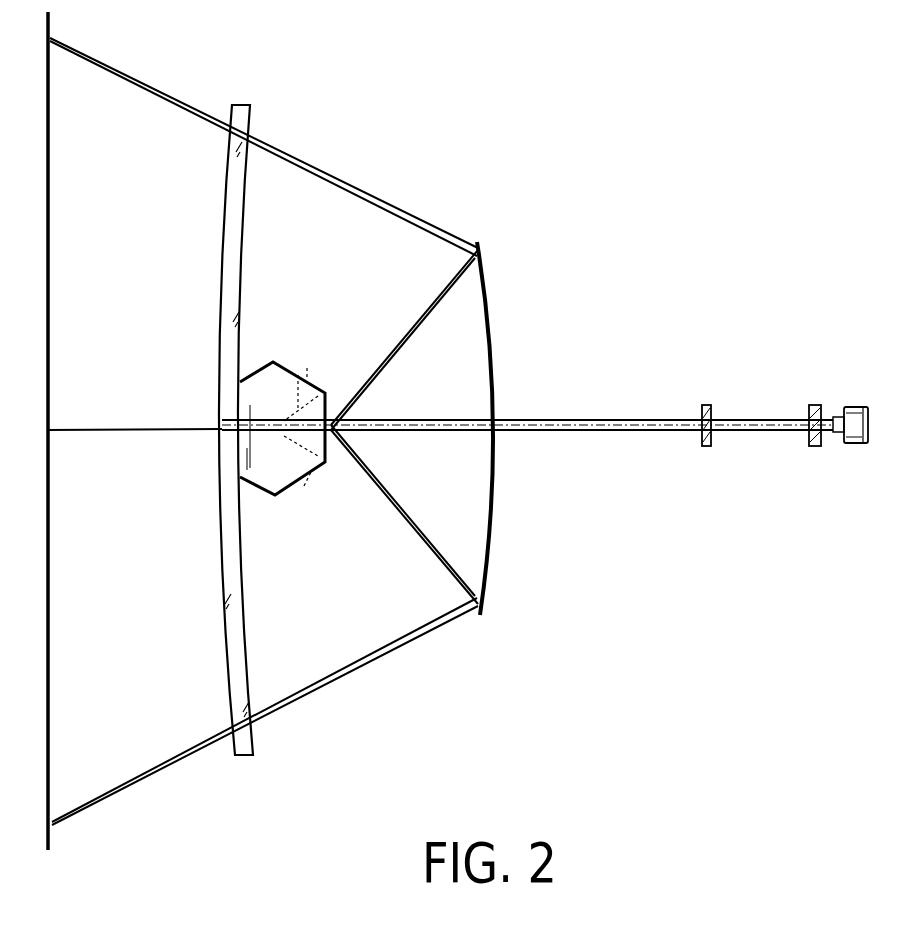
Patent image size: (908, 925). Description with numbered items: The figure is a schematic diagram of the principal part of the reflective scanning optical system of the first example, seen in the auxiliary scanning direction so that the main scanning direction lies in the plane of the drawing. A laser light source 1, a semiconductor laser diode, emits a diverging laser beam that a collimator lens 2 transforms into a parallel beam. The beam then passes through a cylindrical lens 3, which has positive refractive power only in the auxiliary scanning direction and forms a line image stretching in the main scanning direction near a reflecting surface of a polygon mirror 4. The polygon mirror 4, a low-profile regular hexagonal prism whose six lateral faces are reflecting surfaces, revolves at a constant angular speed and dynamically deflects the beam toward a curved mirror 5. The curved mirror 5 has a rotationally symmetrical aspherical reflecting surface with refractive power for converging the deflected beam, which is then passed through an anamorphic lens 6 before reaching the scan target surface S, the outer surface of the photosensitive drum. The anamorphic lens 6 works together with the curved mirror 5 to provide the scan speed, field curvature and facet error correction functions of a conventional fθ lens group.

The scan target surface S is at (50, 250).
The laser light source 1 is at (852, 407).
The collimator lens 2 is at (812, 441).
The cylindrical lens 3 is at (702, 441).
The polygon mirror 4 is at (275, 481).
The curved mirror 5 is at (491, 343).
The anamorphic lens 6 is at (237, 629).